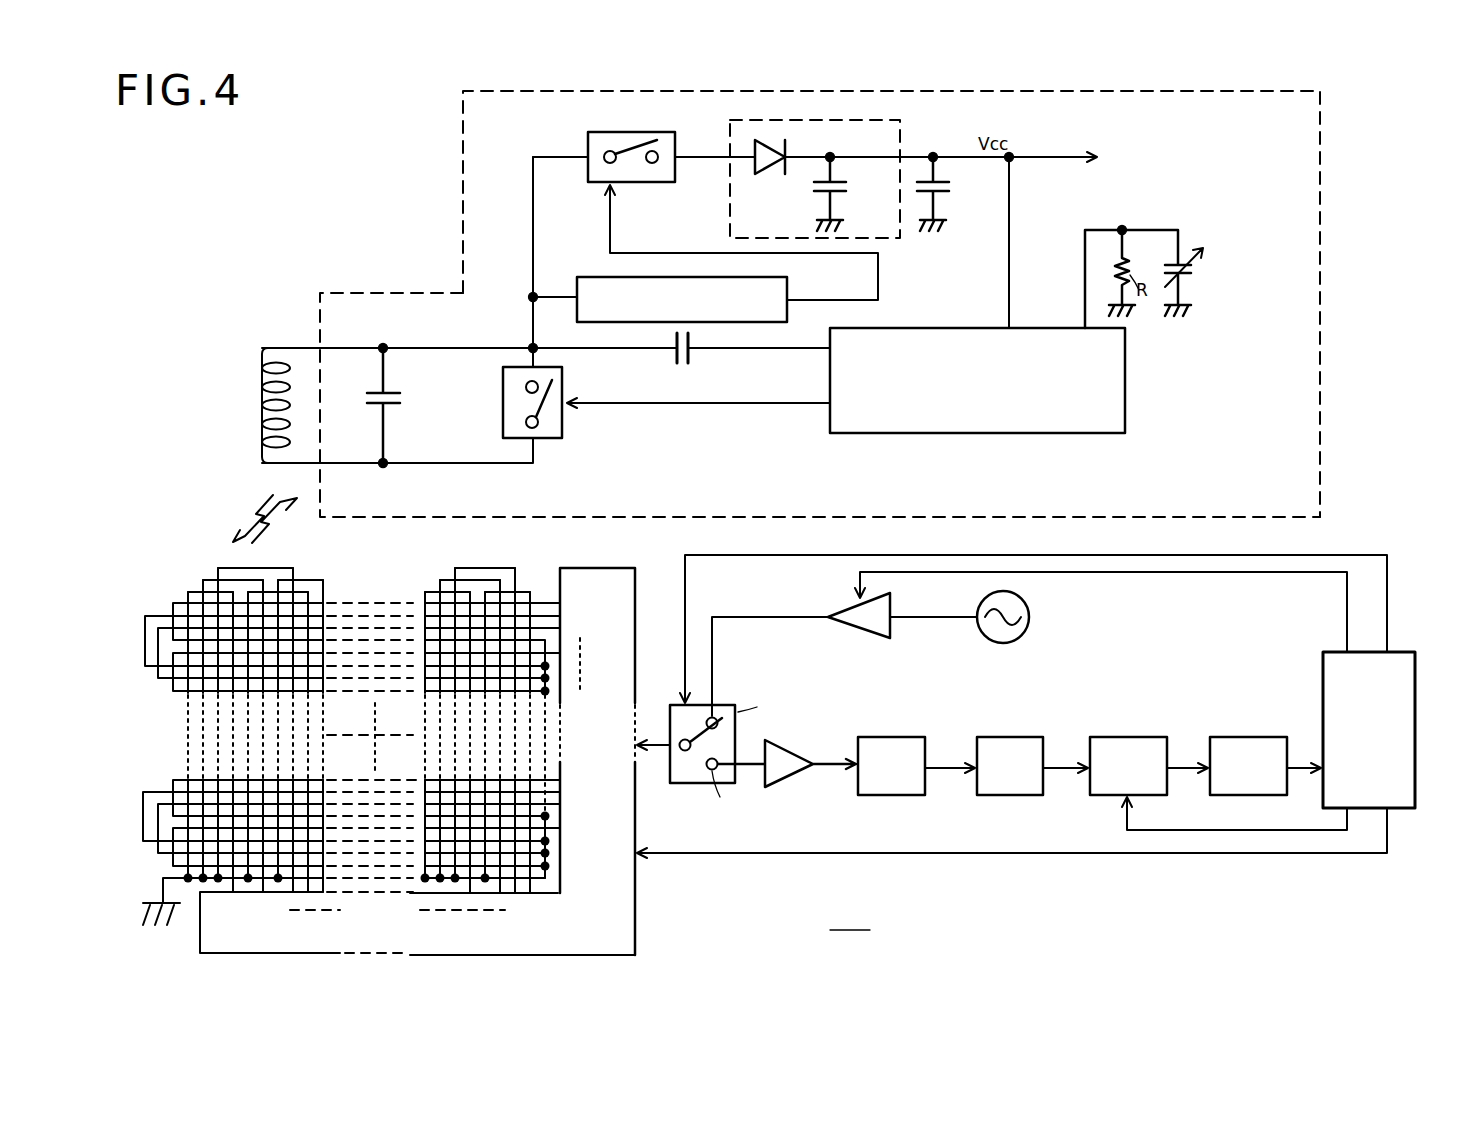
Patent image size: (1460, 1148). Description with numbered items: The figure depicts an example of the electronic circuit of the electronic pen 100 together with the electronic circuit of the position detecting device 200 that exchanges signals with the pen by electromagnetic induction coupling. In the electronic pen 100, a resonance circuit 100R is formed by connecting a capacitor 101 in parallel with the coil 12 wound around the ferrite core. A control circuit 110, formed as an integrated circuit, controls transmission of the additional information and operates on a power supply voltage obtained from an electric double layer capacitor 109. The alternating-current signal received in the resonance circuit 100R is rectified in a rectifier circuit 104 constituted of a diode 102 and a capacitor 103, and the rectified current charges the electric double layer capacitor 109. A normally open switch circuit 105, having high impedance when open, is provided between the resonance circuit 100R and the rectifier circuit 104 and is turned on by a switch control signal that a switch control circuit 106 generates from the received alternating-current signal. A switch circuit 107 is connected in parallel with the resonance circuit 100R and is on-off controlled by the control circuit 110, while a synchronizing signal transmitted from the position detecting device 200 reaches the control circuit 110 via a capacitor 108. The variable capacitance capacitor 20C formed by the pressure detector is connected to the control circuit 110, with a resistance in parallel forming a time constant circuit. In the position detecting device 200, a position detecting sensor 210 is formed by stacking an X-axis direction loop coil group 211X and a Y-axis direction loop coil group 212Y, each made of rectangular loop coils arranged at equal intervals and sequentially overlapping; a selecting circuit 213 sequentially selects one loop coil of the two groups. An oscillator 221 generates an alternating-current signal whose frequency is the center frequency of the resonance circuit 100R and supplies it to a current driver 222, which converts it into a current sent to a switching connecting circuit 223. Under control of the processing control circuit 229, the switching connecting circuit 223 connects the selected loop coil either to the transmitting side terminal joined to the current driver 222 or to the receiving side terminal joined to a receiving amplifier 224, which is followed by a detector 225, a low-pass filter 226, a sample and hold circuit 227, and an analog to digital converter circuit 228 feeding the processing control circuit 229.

The coil 12 is at (262, 406).
The electronic pen 100 is at (463, 216).
The resonance circuit 100R is at (405, 508).
The capacitor 101 is at (403, 397).
The diode 102 is at (772, 172).
The capacitor 103 is at (846, 190).
The rectifier circuit 104 is at (730, 188).
The switch circuit 105 is at (588, 183).
The switch control circuit 106 is at (790, 306).
The switch circuit 107 is at (565, 432).
The capacitor 108 is at (688, 363).
The electric double layer capacitor 109 is at (950, 190).
The control circuit 110 is at (926, 327).
The variable capacitance capacitor 20C is at (1192, 276).
The position detecting device 200 is at (853, 918).
The position detecting sensor 210 is at (358, 741).
The X-axis direction loop coil group 211X is at (471, 567).
The Y-axis direction loop coil group 212Y is at (140, 806).
The selecting circuit 213 is at (582, 568).
The oscillator 221 is at (1030, 617).
The current driver 222 is at (850, 625).
The switching connecting circuit 223 is at (682, 785).
The receiving amplifier 224 is at (795, 776).
The detector 225 is at (880, 736).
The low-pass filter 226 is at (990, 737).
The sample and hold circuit 227 is at (1108, 737).
The analog to digital converter circuit 228 is at (1225, 737).
The processing control circuit 229 is at (1410, 648).